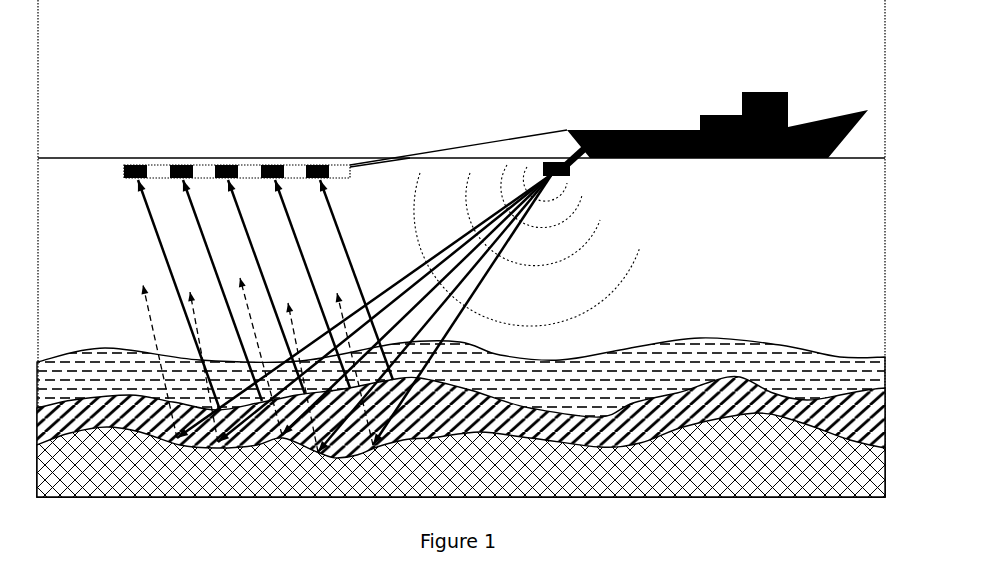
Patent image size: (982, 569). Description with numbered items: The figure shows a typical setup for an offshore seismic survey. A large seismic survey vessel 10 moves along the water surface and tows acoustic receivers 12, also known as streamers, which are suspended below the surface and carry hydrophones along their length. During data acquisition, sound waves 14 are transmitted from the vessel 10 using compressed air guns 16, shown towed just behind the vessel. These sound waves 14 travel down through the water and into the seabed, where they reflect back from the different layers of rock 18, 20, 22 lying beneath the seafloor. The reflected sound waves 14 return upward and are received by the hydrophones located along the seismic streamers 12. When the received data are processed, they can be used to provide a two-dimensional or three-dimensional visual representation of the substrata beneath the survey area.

The seismic survey vessel 10 is at (788, 122).
The acoustic receivers 12 is at (183, 165).
The sound waves 14 is at (602, 222).
The compressed air guns 16 is at (543, 163).
The layer of rock 18 is at (678, 352).
The layer of rock 20 is at (722, 387).
The layer of rock 22 is at (770, 425).